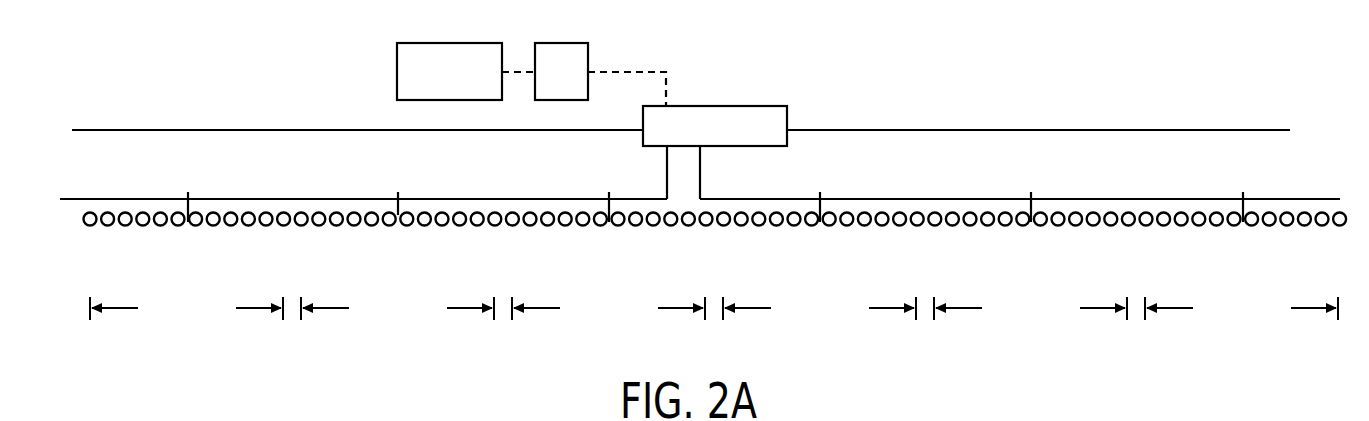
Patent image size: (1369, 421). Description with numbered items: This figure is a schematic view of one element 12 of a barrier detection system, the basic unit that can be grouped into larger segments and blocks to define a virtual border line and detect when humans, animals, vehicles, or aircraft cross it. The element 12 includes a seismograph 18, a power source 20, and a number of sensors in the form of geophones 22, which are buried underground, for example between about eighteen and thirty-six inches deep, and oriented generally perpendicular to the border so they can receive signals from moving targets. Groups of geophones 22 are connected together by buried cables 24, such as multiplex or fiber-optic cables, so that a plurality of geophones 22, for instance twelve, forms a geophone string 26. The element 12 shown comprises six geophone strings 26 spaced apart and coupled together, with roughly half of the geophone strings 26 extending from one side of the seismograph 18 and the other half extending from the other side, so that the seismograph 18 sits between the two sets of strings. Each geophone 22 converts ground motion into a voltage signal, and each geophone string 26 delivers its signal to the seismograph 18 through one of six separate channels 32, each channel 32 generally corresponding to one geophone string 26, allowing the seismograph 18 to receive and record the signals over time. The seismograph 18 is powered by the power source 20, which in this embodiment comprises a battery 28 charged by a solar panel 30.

The element 12 is at (723, 63).
The seismograph 18 is at (776, 106).
The power source 20 is at (551, 30).
The geophone 22 is at (125, 212).
The cable 24 is at (667, 176).
The geophone string 26 is at (195, 232).
The battery 28 is at (590, 56).
The solar panel 30 is at (433, 43).
The channel 32 is at (186, 324).